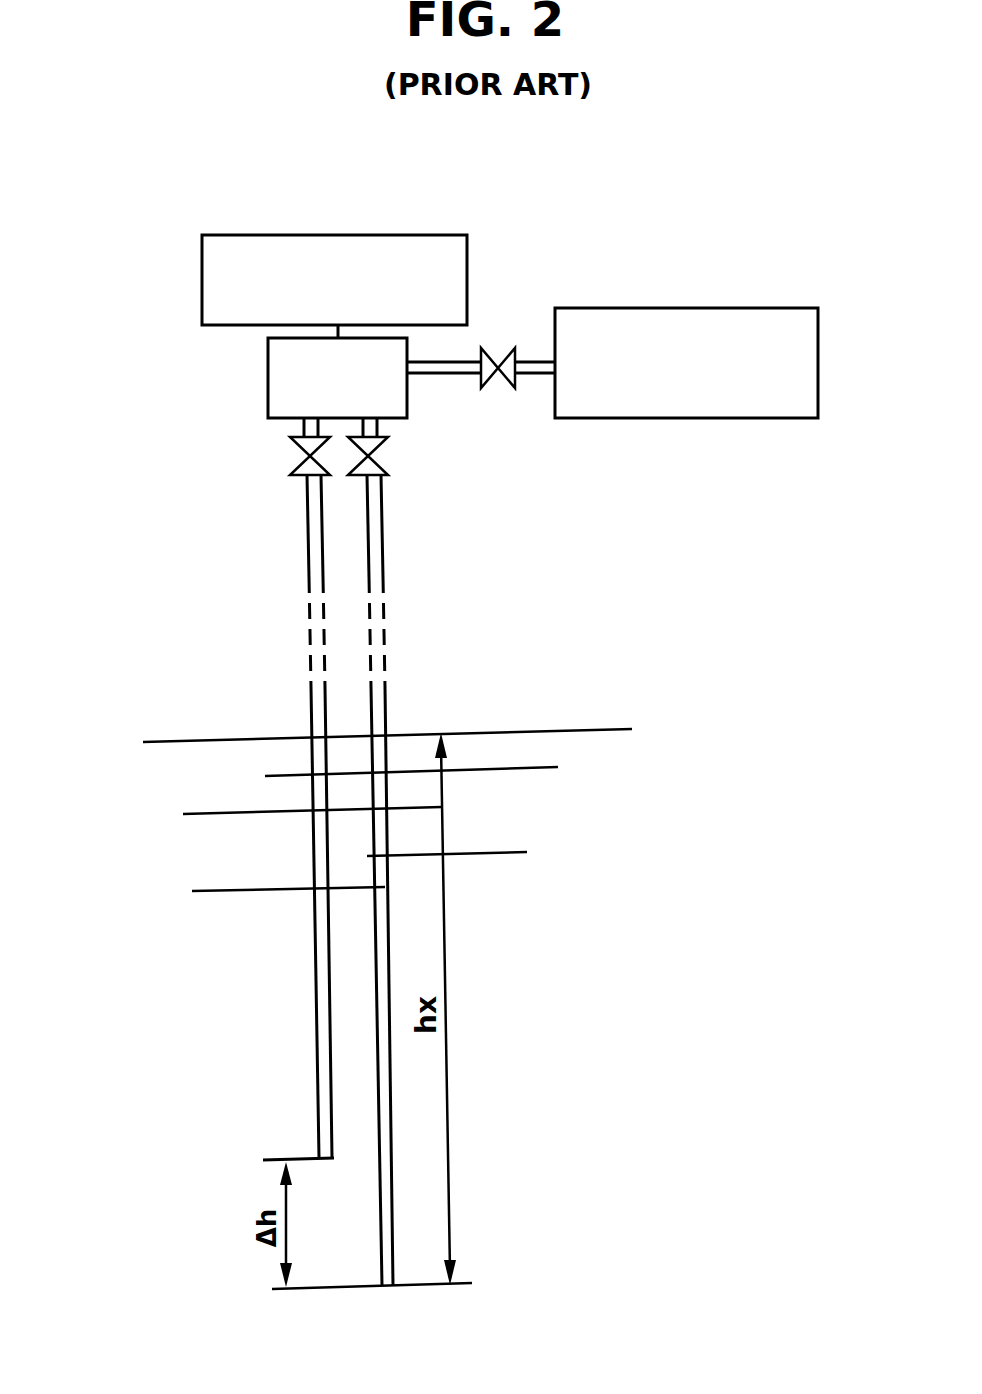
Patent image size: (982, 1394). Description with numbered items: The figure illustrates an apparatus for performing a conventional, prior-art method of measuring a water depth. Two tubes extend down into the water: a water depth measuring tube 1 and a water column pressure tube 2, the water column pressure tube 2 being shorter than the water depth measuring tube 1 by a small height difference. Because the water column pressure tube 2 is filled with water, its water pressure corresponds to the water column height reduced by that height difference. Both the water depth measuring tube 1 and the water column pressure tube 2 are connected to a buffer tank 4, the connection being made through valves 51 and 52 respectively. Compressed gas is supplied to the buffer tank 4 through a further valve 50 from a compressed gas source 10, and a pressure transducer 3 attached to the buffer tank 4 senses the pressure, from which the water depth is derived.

The water depth measuring tube 1 is at (383, 700).
The water column pressure tube 2 is at (312, 705).
The pressure transducer 3 is at (202, 280).
The buffer tank 4 is at (268, 378).
The compressed gas transducer 10 is at (683, 308).
The valve 50 is at (481, 348).
The valve 51 is at (388, 462).
The valve 52 is at (290, 462).